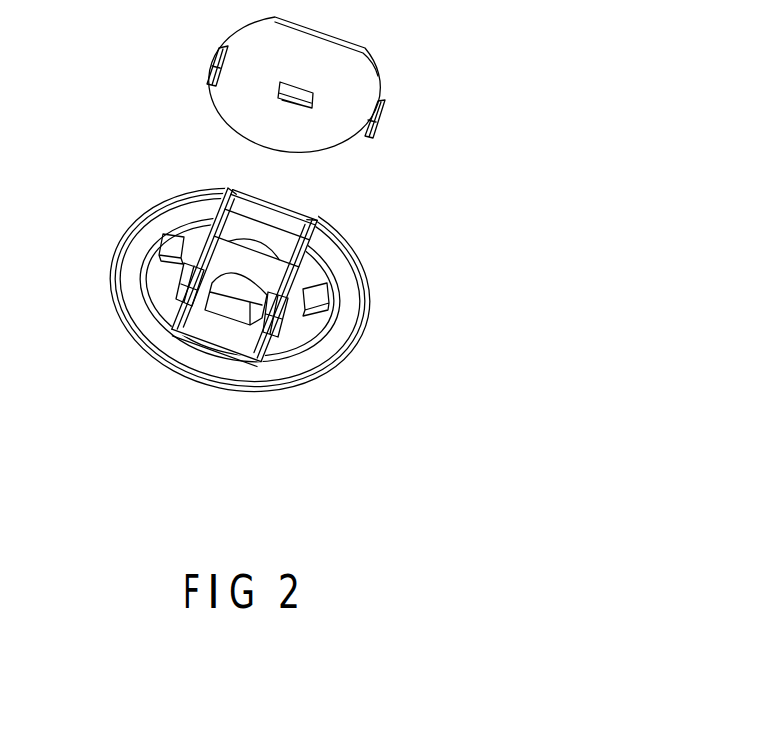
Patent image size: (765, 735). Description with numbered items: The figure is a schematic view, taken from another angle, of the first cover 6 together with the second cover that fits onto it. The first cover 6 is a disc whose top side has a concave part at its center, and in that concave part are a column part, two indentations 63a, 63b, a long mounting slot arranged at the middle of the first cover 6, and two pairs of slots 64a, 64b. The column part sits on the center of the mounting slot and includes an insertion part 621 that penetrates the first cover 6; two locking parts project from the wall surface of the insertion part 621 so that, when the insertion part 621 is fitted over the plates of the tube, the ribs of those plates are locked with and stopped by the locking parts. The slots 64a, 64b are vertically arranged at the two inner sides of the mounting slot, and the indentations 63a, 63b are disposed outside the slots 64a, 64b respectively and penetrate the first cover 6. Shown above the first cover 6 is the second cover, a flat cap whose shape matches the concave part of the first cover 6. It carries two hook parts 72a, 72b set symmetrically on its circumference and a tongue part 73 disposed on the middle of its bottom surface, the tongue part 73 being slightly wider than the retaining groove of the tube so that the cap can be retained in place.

The first cover 6 is at (143, 189).
The indentation 63a is at (302, 305).
The indentation 63b is at (180, 257).
The slot 64a is at (287, 299).
The slot 64b is at (193, 263).
The insertion part 621 is at (242, 283).
The hook part 72a is at (383, 117).
The hook part 72b is at (212, 70).
The tongue part 73 is at (293, 95).